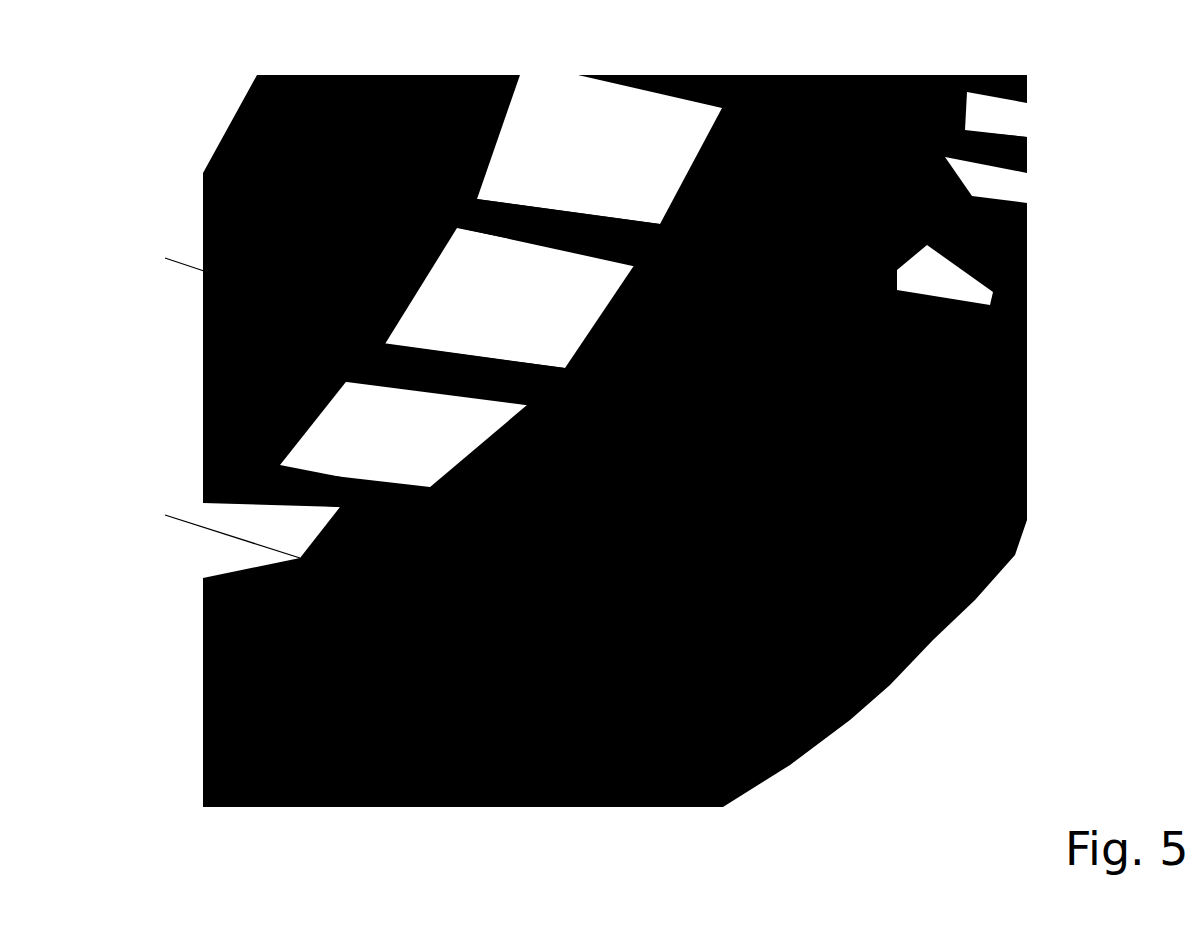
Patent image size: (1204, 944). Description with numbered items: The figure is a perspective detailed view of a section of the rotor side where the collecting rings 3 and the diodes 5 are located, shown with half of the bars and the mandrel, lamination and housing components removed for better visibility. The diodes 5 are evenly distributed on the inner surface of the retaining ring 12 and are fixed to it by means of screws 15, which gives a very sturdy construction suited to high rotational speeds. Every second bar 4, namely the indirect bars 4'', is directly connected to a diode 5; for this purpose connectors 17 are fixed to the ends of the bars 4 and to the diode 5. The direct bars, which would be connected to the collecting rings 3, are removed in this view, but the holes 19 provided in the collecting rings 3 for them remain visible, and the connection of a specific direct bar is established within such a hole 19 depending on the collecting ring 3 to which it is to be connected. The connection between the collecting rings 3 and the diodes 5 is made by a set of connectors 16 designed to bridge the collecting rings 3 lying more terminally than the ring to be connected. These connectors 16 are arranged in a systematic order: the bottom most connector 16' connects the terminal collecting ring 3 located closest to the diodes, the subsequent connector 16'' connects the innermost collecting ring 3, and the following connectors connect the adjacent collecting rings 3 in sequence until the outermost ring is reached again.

The collecting ring 3 is at (810, 77).
The bar 4 is at (1002, 132).
The indirect bar 4'' is at (438, 262).
The diode 5 is at (1023, 248).
The retaining ring 12 is at (857, 705).
The screw 15 is at (1022, 380).
The connector 16 is at (988, 429).
The bottom most connector 16' is at (408, 830).
The subsequent connector 16'' is at (556, 830).
The connector 17 is at (1027, 323).
The hole 19 is at (960, 495).